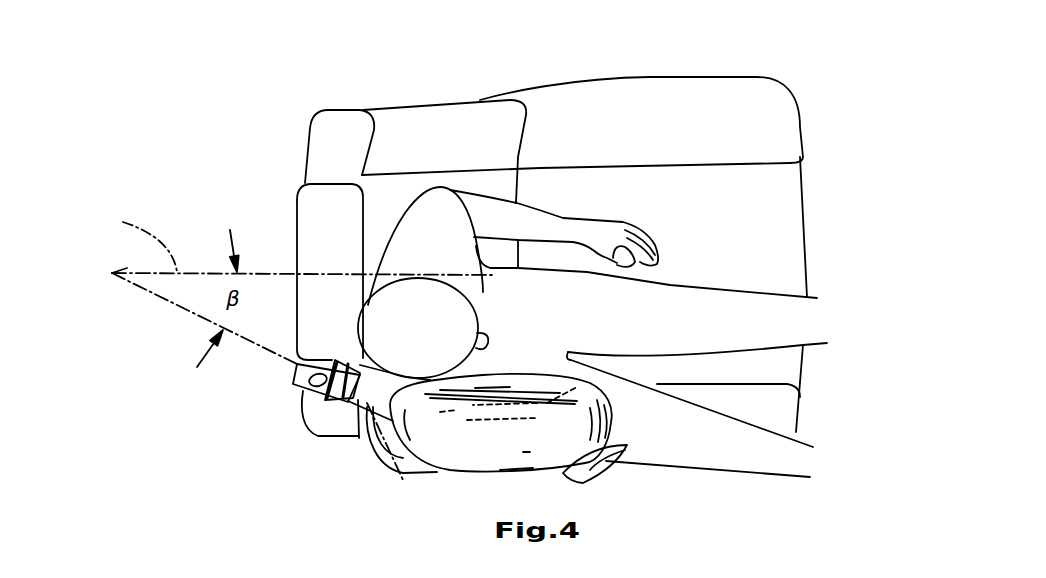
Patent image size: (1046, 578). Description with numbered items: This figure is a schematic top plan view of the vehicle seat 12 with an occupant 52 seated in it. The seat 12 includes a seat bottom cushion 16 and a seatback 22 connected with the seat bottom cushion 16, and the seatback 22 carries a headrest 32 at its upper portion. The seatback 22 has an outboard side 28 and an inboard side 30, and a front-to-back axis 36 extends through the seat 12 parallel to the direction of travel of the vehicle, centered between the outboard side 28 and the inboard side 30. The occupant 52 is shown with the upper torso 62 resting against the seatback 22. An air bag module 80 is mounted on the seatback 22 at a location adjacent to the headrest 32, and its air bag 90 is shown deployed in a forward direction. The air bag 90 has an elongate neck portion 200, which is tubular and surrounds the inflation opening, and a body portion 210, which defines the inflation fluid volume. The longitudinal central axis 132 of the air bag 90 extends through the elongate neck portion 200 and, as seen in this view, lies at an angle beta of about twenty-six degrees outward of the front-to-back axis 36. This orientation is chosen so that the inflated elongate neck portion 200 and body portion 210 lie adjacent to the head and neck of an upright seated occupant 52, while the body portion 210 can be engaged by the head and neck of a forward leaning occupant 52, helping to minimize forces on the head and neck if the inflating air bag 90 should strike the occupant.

The seat 12 is at (719, 62).
The seat bottom cushion 16 is at (818, 188).
The seatback 22 is at (295, 125).
The outboard side 28 is at (358, 440).
The inboard side 30 is at (363, 110).
The headrest 32 is at (310, 228).
The front-to-back axis 36 is at (291, 241).
The occupant 52 is at (697, 275).
The upper torso 62 is at (443, 212).
The air bag module 80 is at (278, 381).
The air bag 90 is at (538, 364).
The longitudinal central axis 132 is at (390, 438).
The elongate neck portion 200 is at (334, 424).
The body portion 210 is at (629, 426).